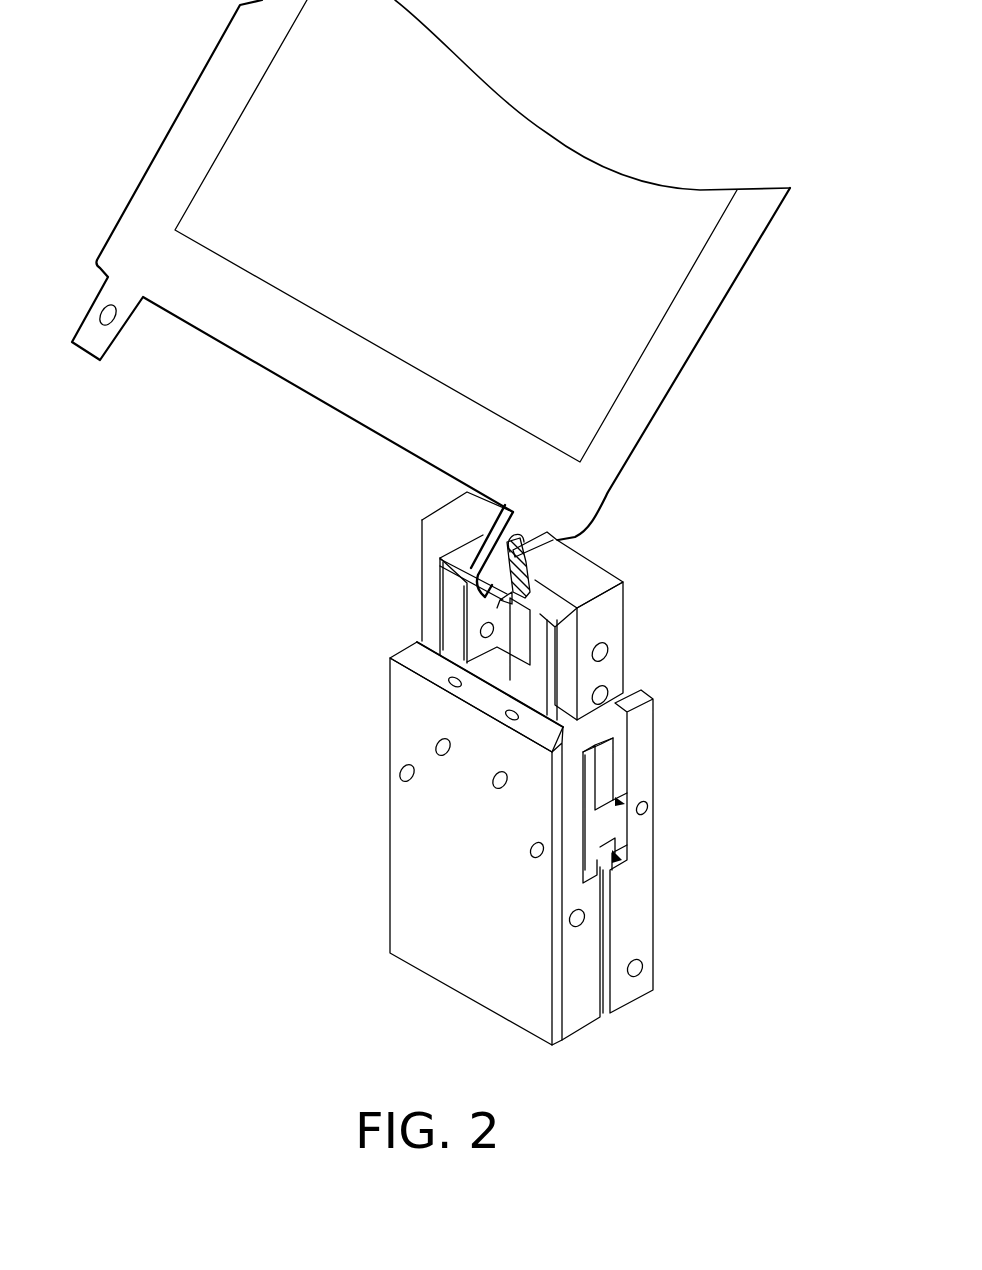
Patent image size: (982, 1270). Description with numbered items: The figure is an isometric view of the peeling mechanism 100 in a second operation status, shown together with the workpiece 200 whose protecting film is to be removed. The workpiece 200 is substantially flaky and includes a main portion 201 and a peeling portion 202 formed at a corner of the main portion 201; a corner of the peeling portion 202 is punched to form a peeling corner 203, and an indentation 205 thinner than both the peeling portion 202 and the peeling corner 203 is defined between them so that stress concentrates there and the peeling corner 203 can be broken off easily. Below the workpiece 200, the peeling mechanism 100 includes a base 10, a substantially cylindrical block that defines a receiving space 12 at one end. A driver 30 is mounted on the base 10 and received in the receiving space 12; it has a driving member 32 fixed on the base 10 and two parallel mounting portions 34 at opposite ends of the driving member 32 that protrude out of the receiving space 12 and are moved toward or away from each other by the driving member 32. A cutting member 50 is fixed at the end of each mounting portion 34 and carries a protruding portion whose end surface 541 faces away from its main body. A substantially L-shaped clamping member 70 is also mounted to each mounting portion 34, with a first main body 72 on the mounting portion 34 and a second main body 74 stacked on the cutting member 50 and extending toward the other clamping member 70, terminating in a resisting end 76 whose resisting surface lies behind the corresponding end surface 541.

The workpiece 200 is at (419, 335).
The main portion 201 is at (320, 362).
The peeling portion 202 is at (409, 568).
The peeling corner 203 is at (498, 598).
The indentation 205 is at (490, 557).
The cutting member 50 is at (423, 596).
The end surface 541 is at (525, 598).
The peeling mechanism 100 is at (600, 787).
The base 10 is at (638, 928).
The receiving space 12 is at (627, 860).
The driver 30 is at (638, 740).
The driving member 32 is at (607, 768).
The mounting portion 34 is at (538, 672).
The clamping member 70 is at (634, 624).
The first main body 72 is at (597, 628).
The second main body 74 is at (578, 588).
The resisting end 76 is at (543, 547).